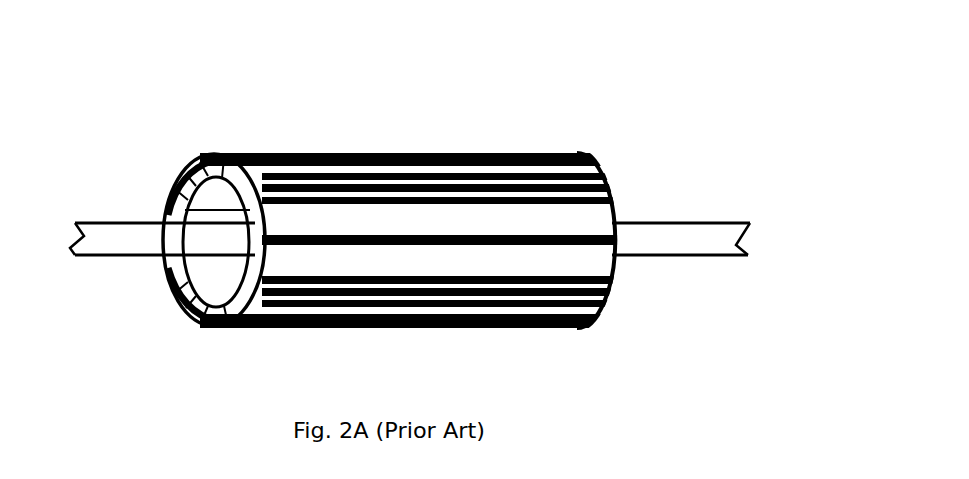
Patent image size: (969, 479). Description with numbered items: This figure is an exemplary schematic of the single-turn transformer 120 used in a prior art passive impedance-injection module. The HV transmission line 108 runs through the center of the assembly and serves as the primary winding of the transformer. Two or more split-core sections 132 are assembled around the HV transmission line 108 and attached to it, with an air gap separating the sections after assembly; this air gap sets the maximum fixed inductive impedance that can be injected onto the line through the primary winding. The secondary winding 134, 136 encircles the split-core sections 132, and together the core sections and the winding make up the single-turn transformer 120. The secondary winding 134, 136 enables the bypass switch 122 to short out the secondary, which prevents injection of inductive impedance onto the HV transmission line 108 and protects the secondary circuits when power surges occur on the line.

The HV transmission line 108 is at (678, 258).
The single-turn transformer 120 is at (350, 131).
The bypass switch 122 is at (166, 198).
The split-core sections 132 is at (416, 240).
The secondary winding 134 is at (577, 155).
The secondary winding 136 is at (166, 283).